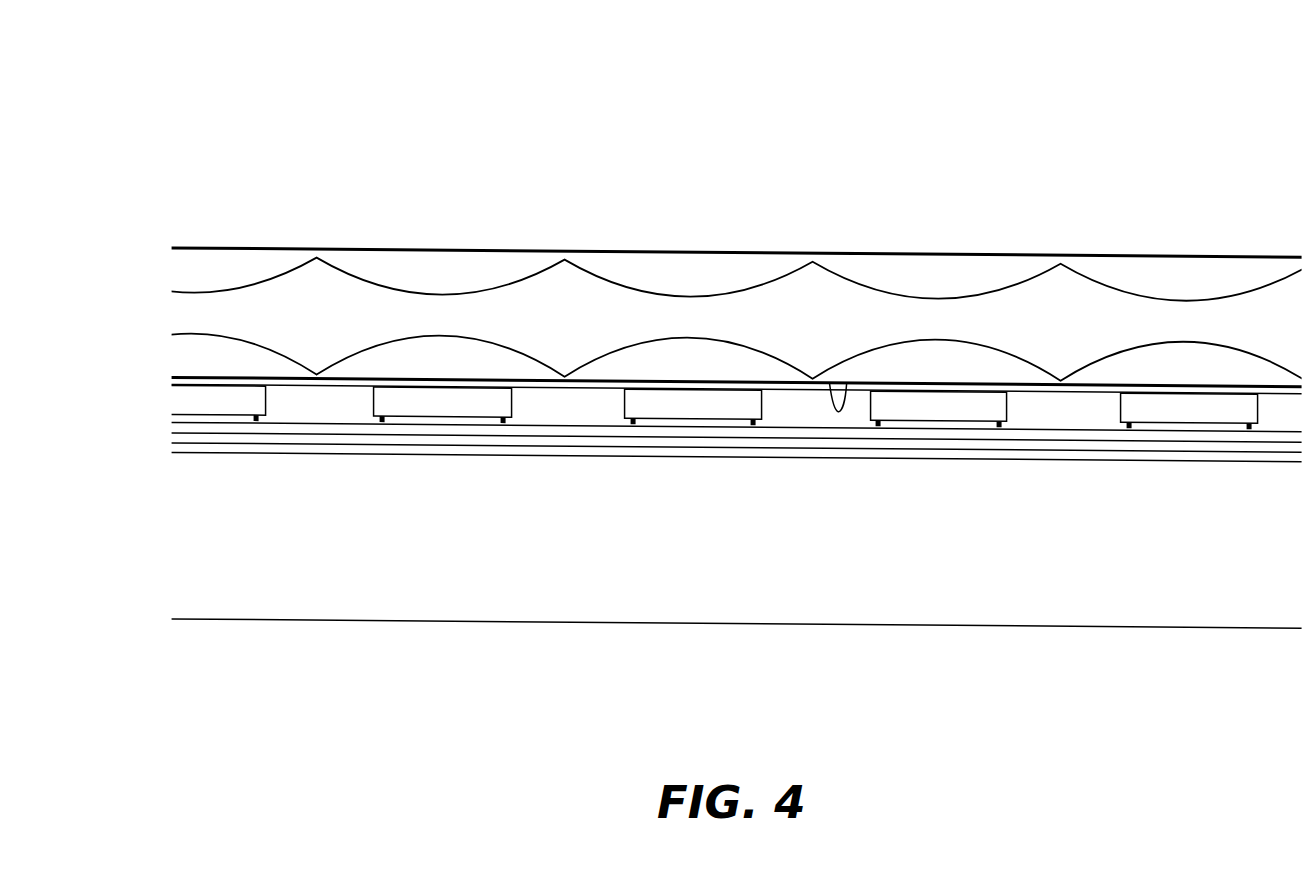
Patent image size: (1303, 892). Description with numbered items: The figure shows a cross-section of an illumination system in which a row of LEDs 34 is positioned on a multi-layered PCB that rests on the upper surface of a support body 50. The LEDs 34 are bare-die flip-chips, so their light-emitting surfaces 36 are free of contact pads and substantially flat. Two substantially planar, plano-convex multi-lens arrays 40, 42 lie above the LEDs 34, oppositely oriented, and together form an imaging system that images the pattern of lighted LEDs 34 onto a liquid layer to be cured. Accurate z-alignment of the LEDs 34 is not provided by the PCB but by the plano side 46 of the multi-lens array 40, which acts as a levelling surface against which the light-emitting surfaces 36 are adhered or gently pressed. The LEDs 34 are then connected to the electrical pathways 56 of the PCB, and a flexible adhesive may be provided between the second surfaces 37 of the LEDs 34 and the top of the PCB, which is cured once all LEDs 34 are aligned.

The LED 34 is at (684, 400).
The light-emitting surface 36 is at (1189, 390).
The second surface 37 is at (1189, 420).
The multi-lens array 40 is at (160, 352).
The multi-lens array 42 is at (160, 264).
The plano side 46 is at (847, 403).
The support body 50 is at (740, 588).
The electrical pathways 56 is at (288, 436).